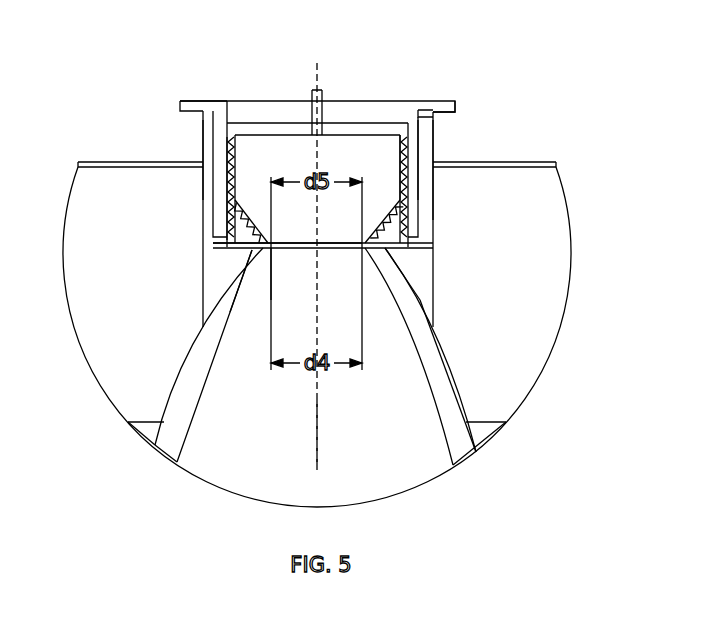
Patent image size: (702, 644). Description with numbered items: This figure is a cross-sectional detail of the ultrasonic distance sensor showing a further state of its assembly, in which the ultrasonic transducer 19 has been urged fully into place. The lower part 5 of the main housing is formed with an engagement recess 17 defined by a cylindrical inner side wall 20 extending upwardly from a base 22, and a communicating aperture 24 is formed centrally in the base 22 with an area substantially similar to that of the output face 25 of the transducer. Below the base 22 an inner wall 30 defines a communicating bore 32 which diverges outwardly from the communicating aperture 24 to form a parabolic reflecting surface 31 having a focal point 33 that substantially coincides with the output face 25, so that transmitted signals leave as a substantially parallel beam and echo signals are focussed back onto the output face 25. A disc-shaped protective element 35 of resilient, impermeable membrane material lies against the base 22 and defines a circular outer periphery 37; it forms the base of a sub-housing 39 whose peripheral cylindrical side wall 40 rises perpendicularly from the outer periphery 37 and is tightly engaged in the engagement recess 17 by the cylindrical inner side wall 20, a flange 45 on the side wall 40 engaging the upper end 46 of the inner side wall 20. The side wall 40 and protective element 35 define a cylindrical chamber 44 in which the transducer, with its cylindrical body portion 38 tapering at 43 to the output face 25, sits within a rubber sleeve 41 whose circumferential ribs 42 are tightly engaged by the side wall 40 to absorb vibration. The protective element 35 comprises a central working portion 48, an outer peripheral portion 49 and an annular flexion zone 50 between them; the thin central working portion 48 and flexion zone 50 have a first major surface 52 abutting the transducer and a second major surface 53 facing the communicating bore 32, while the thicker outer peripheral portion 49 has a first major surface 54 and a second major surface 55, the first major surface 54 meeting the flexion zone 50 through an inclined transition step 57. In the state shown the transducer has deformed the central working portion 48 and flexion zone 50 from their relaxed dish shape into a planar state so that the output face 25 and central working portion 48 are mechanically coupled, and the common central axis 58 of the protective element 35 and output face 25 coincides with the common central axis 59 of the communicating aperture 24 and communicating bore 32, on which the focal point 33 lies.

The lower part 5 is at (533, 167).
The engagement recess 17 is at (238, 228).
The ultrasonic transducer 19 is at (389, 140).
The cylindrical inner side wall 20 is at (203, 142).
The base 22 is at (237, 260).
The communicating aperture 24 is at (268, 252).
The output face 25 is at (312, 243).
The inner wall 30 is at (443, 390).
The parabolic reflecting surface 31 is at (423, 482).
The communicating bore 32 is at (197, 453).
The focal point 33 is at (318, 243).
The protective element 35 is at (400, 231).
The outer periphery 37 is at (370, 245).
The cylindrical body portion 38 is at (342, 150).
The sub-housing 39 is at (437, 124).
The peripheral cylindrical side wall 40 is at (435, 117).
The sleeve 41 is at (435, 167).
The ribs 42 is at (207, 155).
The taper 43 is at (255, 244).
The cylindrical chamber 44 is at (368, 108).
The flange 45 is at (442, 110).
The upper end 46 is at (217, 103).
The central working portion 48 is at (318, 250).
The outer peripheral portion 49 is at (390, 251).
The annular flexion zone 50 is at (393, 253).
The first major surface 52 is at (273, 242).
The second major surface 53 is at (273, 252).
The first major surface of outer peripheral portion 54 is at (227, 237).
The second major surface of outer peripheral portion 55 is at (263, 250).
The inclined transition step 57 is at (266, 235).
The common central axis 58 is at (318, 66).
The common central axis 59 is at (318, 437).